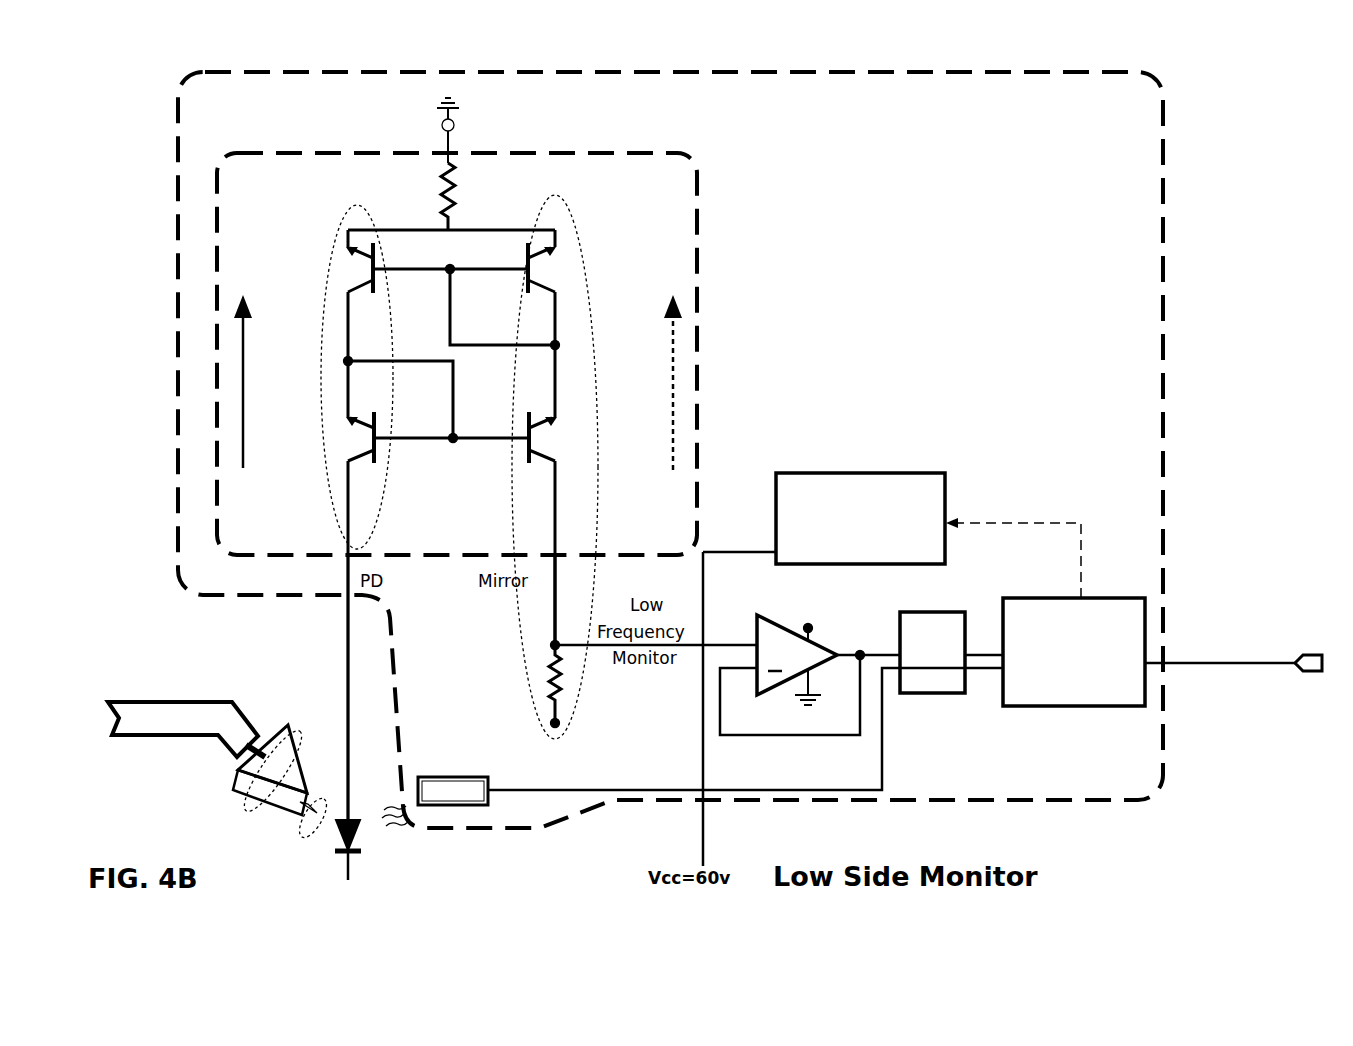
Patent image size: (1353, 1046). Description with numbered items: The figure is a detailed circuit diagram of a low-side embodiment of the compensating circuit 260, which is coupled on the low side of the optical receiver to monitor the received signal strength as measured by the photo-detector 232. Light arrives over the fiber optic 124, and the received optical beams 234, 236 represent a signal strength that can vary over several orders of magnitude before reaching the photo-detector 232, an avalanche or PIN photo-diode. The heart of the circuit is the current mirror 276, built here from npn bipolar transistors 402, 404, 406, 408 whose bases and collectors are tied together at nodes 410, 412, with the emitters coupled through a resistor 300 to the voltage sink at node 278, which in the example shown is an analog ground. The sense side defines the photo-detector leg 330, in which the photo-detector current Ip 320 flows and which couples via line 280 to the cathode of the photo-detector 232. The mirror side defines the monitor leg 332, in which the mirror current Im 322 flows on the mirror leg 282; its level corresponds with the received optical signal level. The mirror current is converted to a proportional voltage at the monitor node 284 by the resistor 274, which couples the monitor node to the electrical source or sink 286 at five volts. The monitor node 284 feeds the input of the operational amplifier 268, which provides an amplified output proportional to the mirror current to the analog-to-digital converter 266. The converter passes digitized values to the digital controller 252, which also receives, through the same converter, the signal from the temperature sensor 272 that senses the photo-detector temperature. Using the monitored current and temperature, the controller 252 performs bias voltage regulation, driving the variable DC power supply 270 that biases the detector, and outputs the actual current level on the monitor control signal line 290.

The fiber optic 124 is at (154, 698).
The photo-detector 232 is at (367, 838).
The beam 234 is at (306, 831).
The beam 236 is at (240, 806).
The digital controller 252 is at (1102, 598).
The compensating circuit 260 is at (1167, 453).
The analog-to-digital converter 266 is at (912, 612).
The operational amplifier 268 is at (783, 618).
The variable DC power supply 270 is at (945, 500).
The temperature sensor 272 is at (451, 776).
The resistor 274 is at (570, 680).
The current mirror 276 is at (697, 222).
The node 278 is at (442, 126).
The line 280 is at (348, 637).
The mirror leg 282 is at (560, 596).
The monitor node 284 is at (552, 643).
The electrical sink 286 is at (564, 726).
The signal line 290 is at (1300, 656).
The resistor 300 is at (440, 173).
The photo-detector current Ip 320 is at (244, 412).
The mirror current Im 322 is at (672, 404).
The photo-detector leg 330 is at (354, 206).
The monitor leg 332 is at (536, 203).
The npn transistor 402 is at (380, 277).
The npn transistor 404 is at (521, 274).
The npn transistor 406 is at (513, 443).
The npn transistor 408 is at (386, 444).
The base node 410 is at (461, 260).
The collector node 412 is at (454, 434).